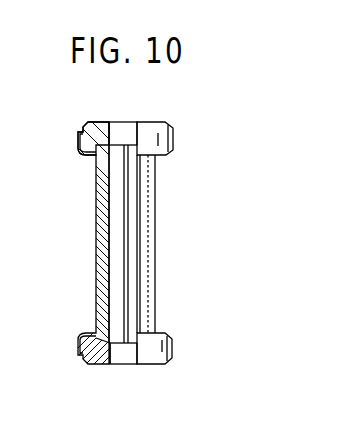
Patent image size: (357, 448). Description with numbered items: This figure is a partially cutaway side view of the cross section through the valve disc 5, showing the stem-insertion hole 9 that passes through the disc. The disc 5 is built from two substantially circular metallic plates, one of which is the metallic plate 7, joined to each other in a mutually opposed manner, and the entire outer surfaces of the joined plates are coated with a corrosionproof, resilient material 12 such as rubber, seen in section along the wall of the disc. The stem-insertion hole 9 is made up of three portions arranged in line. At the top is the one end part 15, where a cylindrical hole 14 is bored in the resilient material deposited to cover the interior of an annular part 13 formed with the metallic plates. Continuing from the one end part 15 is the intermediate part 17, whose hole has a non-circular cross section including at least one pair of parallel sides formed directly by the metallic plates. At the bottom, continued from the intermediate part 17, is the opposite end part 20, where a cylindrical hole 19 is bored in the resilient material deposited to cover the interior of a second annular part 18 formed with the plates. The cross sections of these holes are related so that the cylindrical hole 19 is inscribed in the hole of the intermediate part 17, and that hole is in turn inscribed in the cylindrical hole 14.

The disc 5 is at (148, 170).
The metallic plate 7 is at (103, 238).
The stem-insertion hole 9 is at (118, 297).
The corrosionproof, resilient material 12 is at (148, 233).
The annular part 13 is at (80, 138).
The cylindrical hole 14 is at (109, 121).
The one end part 15 is at (123, 132).
The intermediate part 17 is at (113, 192).
The annular part 18 is at (83, 352).
The cylindrical hole 19 is at (117, 355).
The opposite end part 20 is at (127, 358).